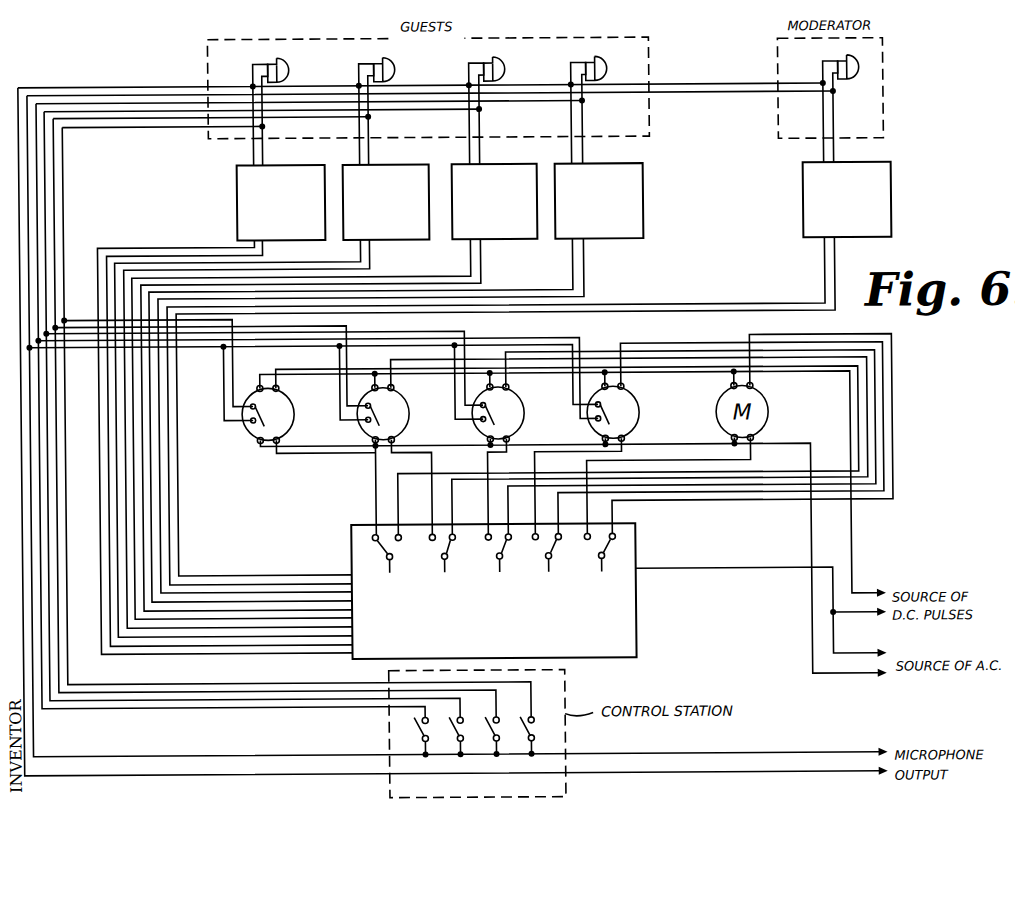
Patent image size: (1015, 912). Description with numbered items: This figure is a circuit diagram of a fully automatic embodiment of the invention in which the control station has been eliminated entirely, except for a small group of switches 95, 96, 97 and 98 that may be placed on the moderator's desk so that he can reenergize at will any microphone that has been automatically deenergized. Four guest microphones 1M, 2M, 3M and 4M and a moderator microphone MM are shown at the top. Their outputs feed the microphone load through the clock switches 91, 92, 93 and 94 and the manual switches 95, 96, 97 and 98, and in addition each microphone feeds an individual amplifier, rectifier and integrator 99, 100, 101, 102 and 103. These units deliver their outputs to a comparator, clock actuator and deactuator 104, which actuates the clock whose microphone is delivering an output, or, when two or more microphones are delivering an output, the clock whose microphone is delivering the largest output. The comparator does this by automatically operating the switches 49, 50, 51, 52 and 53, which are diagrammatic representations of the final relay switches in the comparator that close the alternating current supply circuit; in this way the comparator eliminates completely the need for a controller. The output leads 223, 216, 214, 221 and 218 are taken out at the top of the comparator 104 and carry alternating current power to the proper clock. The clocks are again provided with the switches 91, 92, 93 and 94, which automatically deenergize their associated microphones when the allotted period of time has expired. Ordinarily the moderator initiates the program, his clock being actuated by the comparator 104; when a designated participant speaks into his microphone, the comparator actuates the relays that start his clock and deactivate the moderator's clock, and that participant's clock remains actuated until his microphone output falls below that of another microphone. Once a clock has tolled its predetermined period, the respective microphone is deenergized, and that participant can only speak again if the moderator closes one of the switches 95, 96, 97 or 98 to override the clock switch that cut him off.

The microphone 1M is at (270, 104).
The microphone 2M is at (376, 104).
The microphone 3M is at (486, 103).
The microphone 4M is at (588, 102).
The moderator microphone MM is at (840, 100).
The amplifier, rectifier and integrator 99 is at (239, 200).
The amplifier, rectifier and integrator 100 is at (386, 202).
The amplifier, rectifier and integrator 101 is at (495, 202).
The amplifier, rectifier and integrator 102 is at (599, 201).
The amplifier, rectifier and integrator 103 is at (847, 200).
The comparator, clock actuator and deactuator 104 is at (637, 612).
The clock switch 91 is at (251, 423).
The clock switch 92 is at (366, 421).
The clock switch 93 is at (481, 421).
The clock switch 94 is at (596, 421).
The output lead 214 is at (401, 452).
The output lead 216 is at (293, 452).
The output lead 218 is at (632, 452).
The output lead 221 is at (515, 452).
The output lead 223 is at (754, 460).
The switch 49 is at (380, 554).
The switch 50 is at (441, 547).
The switch 51 is at (497, 547).
The switch 52 is at (548, 547).
The switch 53 is at (601, 547).
The manual switch 95 is at (416, 740).
The manual switch 96 is at (451, 740).
The manual switch 97 is at (487, 740).
The manual switch 98 is at (522, 740).